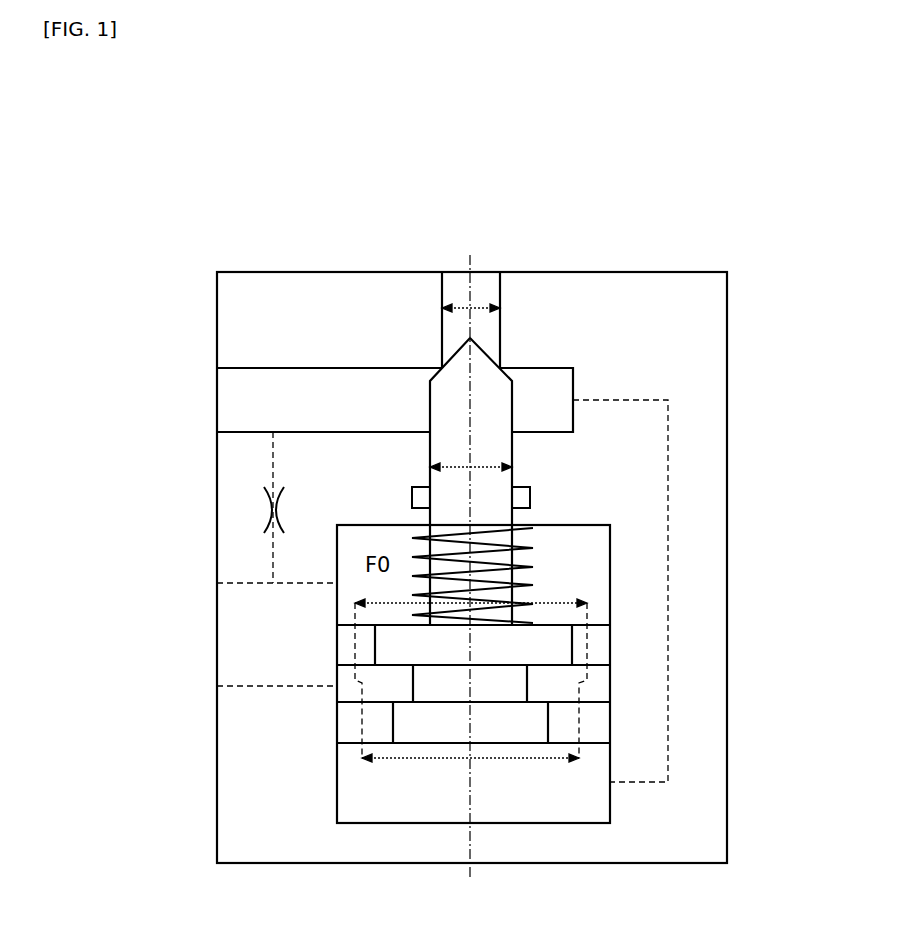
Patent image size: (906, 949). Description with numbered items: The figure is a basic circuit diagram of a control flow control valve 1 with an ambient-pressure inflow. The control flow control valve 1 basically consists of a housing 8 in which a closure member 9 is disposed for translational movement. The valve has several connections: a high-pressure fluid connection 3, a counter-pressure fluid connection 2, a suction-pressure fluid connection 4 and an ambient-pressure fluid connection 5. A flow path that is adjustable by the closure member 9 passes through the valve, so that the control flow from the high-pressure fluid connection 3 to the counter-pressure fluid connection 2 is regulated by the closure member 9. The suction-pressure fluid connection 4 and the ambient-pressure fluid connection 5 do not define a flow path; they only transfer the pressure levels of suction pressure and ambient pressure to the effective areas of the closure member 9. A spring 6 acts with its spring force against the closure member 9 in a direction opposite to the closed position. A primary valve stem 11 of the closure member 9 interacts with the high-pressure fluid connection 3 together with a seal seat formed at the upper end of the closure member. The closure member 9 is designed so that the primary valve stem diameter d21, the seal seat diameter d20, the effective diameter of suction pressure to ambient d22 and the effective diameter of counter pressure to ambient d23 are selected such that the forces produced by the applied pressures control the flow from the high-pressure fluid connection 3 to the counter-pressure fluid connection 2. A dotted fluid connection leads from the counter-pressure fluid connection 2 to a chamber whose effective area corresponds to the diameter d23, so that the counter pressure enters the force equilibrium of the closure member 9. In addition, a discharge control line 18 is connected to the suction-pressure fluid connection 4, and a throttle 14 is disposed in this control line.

The control flow control valve 1 is at (642, 213).
The counter-pressure fluid connection 2 is at (248, 398).
The high-pressure fluid connection 3 is at (462, 270).
The suction-pressure fluid connection 4 is at (232, 583).
The ambient-pressure fluid connection 5 is at (266, 690).
The spring 6 is at (530, 562).
The housing 8 is at (700, 558).
The closure member 9 is at (530, 720).
The primary valve stem 11 is at (450, 405).
The throttle 14 is at (268, 510).
The discharge control line 18 is at (273, 465).
The seal seat diameter d20 is at (488, 300).
The primary valve stem diameter d21 is at (493, 460).
The effective diameter of Ps to ATM d22 is at (587, 603).
The effective diameter of Pb to ATM d23 is at (405, 760).